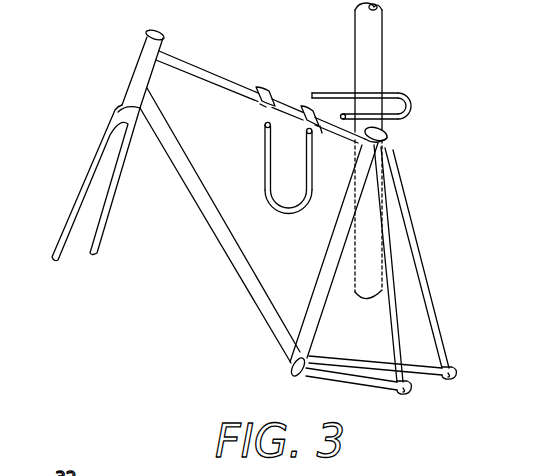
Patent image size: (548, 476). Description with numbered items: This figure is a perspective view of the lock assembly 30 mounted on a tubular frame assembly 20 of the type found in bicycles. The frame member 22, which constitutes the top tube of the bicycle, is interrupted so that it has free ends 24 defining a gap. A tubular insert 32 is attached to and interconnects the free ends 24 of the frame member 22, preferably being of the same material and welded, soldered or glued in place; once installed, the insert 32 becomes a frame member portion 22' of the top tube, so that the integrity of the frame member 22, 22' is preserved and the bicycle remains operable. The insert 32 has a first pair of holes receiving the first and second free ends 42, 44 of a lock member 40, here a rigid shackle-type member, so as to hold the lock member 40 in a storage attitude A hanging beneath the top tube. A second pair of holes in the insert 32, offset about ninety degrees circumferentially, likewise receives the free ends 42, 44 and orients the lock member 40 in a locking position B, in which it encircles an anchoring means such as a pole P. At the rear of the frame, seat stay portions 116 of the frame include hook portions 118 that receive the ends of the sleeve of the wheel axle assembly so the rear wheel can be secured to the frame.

The tubular frame assembly 20 is at (96, 26).
The frame member 22 is at (207, 59).
The frame member portion 22' is at (236, 99).
The free ends 24 is at (250, 84).
The lock assembly 30 is at (293, 99).
The tubular insert 32 is at (262, 111).
The lock member 40 is at (264, 171).
The first free end 42 is at (263, 128).
The second free end 44 is at (306, 134).
The seat stay portions 116 is at (426, 283).
The hook portions 118 is at (453, 378).
The pole P is at (382, 45).
The storage attitude A is at (285, 225).
The locking position B is at (420, 110).